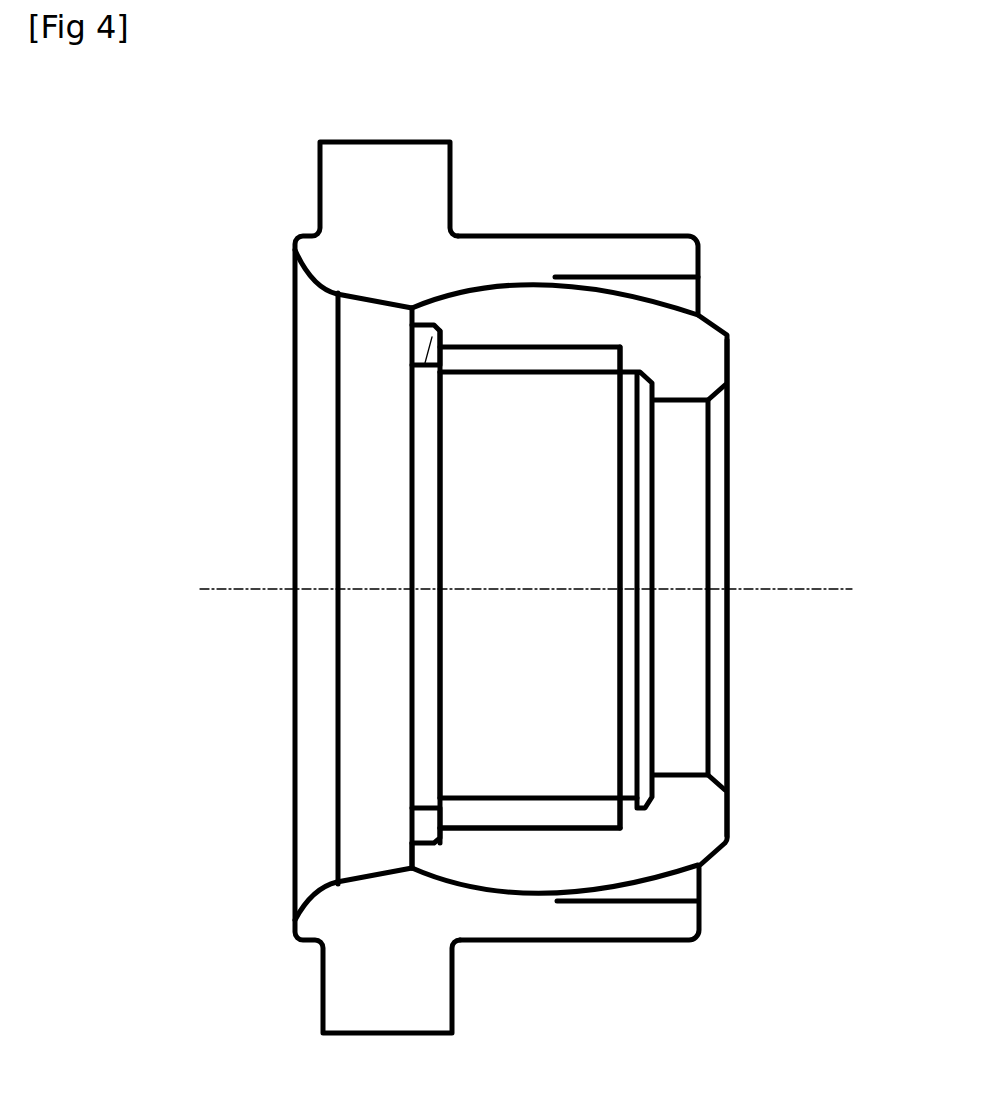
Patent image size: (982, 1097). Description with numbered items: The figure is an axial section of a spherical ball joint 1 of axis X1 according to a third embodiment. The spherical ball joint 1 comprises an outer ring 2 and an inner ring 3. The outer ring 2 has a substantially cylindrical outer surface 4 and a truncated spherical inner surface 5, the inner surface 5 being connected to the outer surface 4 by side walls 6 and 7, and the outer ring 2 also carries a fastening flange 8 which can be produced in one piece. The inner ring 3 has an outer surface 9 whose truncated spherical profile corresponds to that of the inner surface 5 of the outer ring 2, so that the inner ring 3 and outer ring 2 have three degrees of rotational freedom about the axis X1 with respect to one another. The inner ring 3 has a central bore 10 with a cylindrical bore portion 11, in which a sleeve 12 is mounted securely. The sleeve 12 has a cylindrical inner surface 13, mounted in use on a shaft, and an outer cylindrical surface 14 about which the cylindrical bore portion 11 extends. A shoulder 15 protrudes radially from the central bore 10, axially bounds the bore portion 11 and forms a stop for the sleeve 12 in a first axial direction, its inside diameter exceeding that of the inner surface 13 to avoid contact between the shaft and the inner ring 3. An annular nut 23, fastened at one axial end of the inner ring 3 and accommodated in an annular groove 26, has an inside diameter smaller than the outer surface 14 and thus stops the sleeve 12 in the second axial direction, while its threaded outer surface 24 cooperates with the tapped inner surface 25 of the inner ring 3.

The spherical ball joint 1 is at (200, 165).
The outer ring 2 is at (708, 920).
The inner ring 3 is at (729, 827).
The outer surface 4 is at (600, 234).
The inner surface 5 is at (530, 288).
The side wall 6 is at (702, 257).
The side wall 7 is at (330, 890).
The fastening flange 8 is at (340, 996).
The outer surface 9 is at (497, 282).
The central bore 10 is at (680, 405).
The cylindrical bore portion 11 is at (523, 825).
The sleeve 12 is at (485, 787).
The cylindrical inner surface 13 is at (538, 797).
The outer cylindrical surface 14 is at (563, 833).
The shoulder 15 is at (625, 358).
The annular nut 23 is at (410, 823).
The threaded outer surface 24 is at (425, 862).
The tapped inner surface 25 is at (430, 367).
The annular groove 26 is at (425, 344).
The axis X1 is at (529, 572).